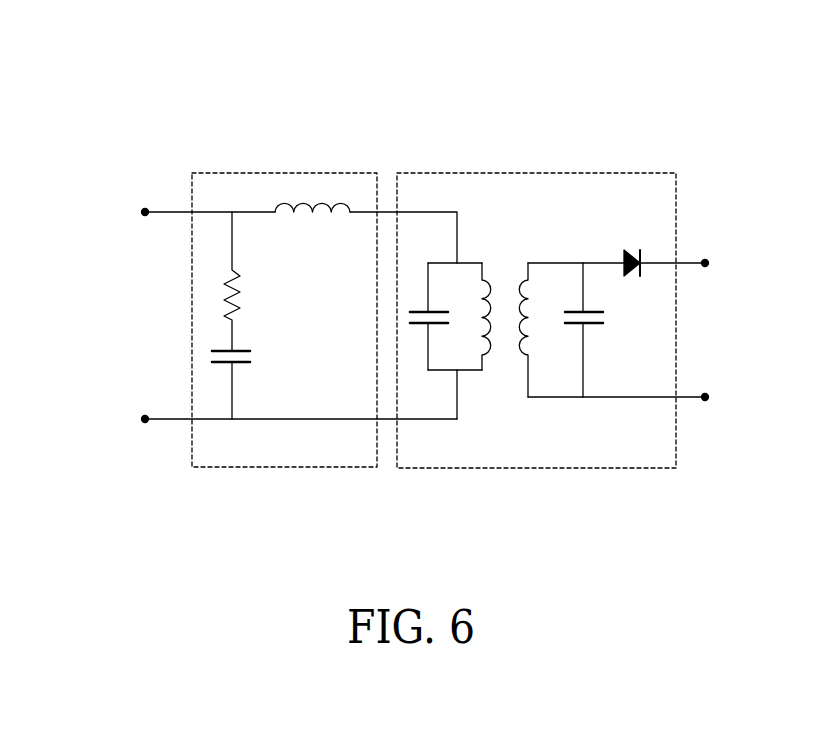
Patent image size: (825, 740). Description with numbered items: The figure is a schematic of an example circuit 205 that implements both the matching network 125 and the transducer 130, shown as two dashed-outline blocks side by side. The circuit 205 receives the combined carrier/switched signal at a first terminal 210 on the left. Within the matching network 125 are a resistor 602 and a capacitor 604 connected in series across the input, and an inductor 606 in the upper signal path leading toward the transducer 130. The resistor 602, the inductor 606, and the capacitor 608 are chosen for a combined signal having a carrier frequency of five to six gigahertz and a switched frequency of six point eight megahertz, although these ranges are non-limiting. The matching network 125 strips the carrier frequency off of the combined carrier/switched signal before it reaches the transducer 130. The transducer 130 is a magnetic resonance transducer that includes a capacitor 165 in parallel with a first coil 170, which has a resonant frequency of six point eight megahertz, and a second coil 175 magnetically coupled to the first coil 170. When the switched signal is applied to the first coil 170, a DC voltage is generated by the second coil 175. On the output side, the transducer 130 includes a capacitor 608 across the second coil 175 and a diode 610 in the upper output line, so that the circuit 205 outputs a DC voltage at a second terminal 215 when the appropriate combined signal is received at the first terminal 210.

The circuit 205 is at (365, 57).
The matching network 125 is at (287, 172).
The transducer 130 is at (537, 172).
The first terminal 210 is at (143, 211).
The second terminal 215 is at (711, 259).
The resistor 602 is at (228, 290).
The capacitor 604 is at (252, 357).
The inductor 606 is at (305, 216).
The capacitor 165 is at (408, 318).
The first coil 170 is at (486, 285).
The second coil 175 is at (525, 356).
The capacitor 608 is at (621, 330).
The diode 610 is at (636, 240).